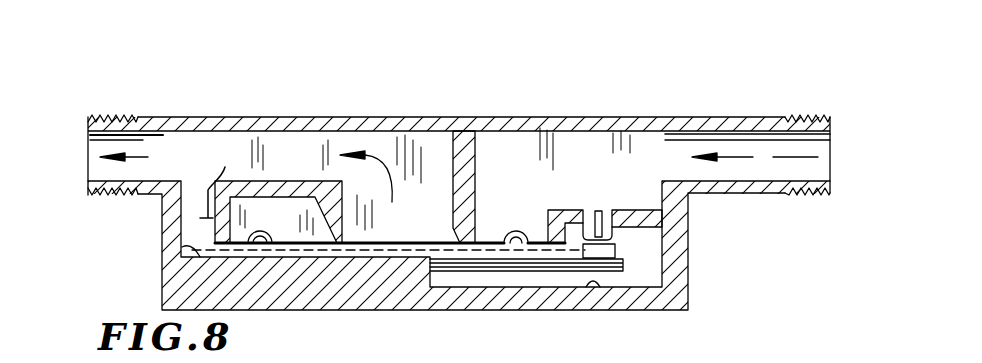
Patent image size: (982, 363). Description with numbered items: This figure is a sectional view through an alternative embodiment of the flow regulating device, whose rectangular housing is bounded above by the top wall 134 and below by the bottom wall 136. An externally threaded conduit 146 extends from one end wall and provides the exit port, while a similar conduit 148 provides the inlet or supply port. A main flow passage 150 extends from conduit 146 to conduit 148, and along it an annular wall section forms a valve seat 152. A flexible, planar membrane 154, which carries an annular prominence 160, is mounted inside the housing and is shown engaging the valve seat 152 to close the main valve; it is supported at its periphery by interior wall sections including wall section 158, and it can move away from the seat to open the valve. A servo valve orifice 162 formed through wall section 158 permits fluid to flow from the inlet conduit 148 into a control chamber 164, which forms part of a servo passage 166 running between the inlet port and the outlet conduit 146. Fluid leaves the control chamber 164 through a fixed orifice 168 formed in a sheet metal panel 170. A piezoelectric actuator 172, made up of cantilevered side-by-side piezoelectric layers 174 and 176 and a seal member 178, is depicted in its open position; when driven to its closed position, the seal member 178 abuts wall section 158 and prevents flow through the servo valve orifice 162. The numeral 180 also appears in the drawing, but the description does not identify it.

The top wall 134 is at (355, 117).
The bottom wall 136 is at (385, 300).
The conduit 146 is at (113, 117).
The conduit 148 is at (762, 117).
The main flow passage 150 is at (315, 163).
The valve seat 152 is at (470, 158).
The membrane 154 is at (414, 242).
The interior wall section 158 is at (573, 220).
The annular prominence 160 is at (513, 229).
The servo valve orifice 162 is at (602, 213).
The control chamber 164 is at (593, 287).
The servo passage 166 is at (182, 247).
The fixed orifice 168 is at (221, 182).
The sheet metal panel 170 is at (193, 218).
The piezoelectric actuator 172 is at (623, 268).
The piezoelectric layer 174 is at (470, 259).
The piezoelectric layer 176 is at (528, 262).
The seal member 178 is at (608, 251).
The connector lead 180 is at (792, 355).